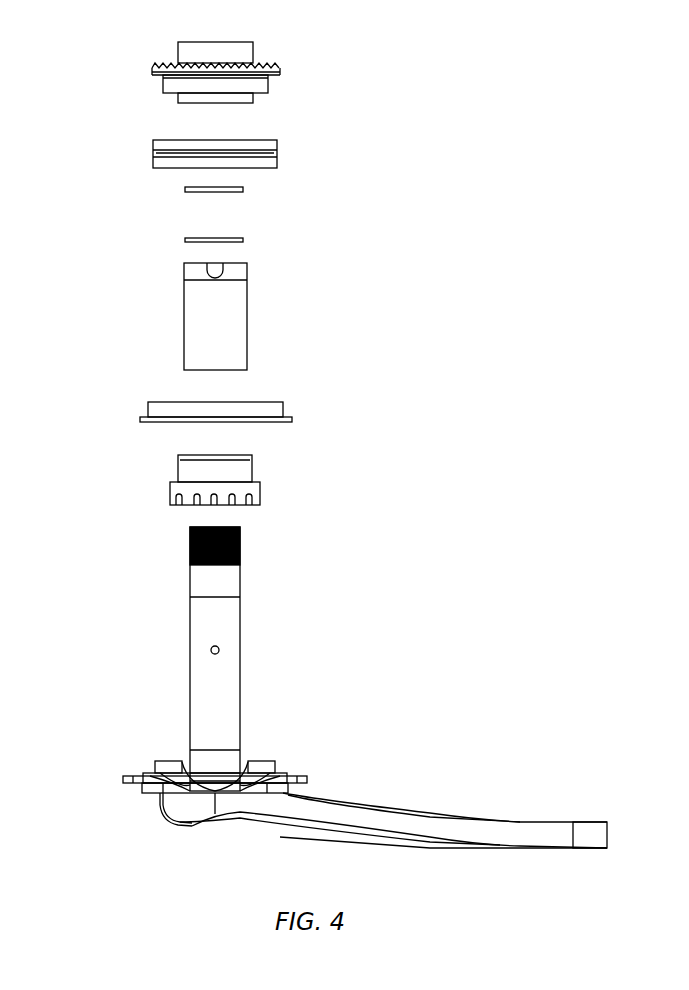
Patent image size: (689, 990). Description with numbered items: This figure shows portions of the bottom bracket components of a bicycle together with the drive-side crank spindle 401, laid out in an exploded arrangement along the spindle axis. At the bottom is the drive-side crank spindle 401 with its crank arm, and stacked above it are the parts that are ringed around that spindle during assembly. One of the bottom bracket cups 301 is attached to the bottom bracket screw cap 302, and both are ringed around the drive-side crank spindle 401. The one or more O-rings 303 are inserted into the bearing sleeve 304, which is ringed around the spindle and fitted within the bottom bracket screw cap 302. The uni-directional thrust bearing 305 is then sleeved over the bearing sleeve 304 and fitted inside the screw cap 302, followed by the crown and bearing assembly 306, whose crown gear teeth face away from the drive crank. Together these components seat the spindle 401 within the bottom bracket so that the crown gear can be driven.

The bottom bracket cup 301 is at (176, 475).
The bottom bracket screw cap 302 is at (146, 408).
The O-rings 303 is at (183, 190).
The bearing sleeve 304 is at (182, 303).
The uni-directional thrust bearing 305 is at (150, 160).
The crown and bearing assembly 306 is at (160, 77).
The drive-side crank spindle 401 is at (244, 607).